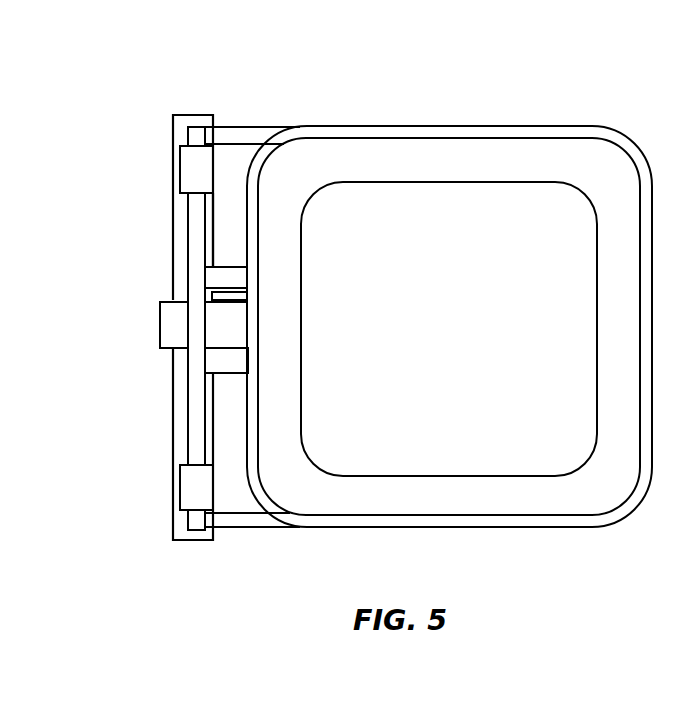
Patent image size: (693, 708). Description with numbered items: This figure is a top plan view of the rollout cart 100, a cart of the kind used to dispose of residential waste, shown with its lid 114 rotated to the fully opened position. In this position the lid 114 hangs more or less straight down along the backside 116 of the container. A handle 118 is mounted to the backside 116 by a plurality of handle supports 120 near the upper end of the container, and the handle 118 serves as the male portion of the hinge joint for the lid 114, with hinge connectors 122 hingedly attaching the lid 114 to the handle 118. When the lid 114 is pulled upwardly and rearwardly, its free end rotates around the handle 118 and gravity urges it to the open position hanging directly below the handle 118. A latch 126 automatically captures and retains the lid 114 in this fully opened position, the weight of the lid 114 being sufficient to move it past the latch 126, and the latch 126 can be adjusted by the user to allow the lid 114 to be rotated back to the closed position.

The rollout cart 100 is at (383, 98).
The lid 114 is at (187, 116).
The backside 116 is at (247, 428).
The handle 118 is at (197, 224).
The handle supports 120 is at (221, 280).
The hinge connectors 122 is at (189, 167).
The latch 126 is at (162, 337).